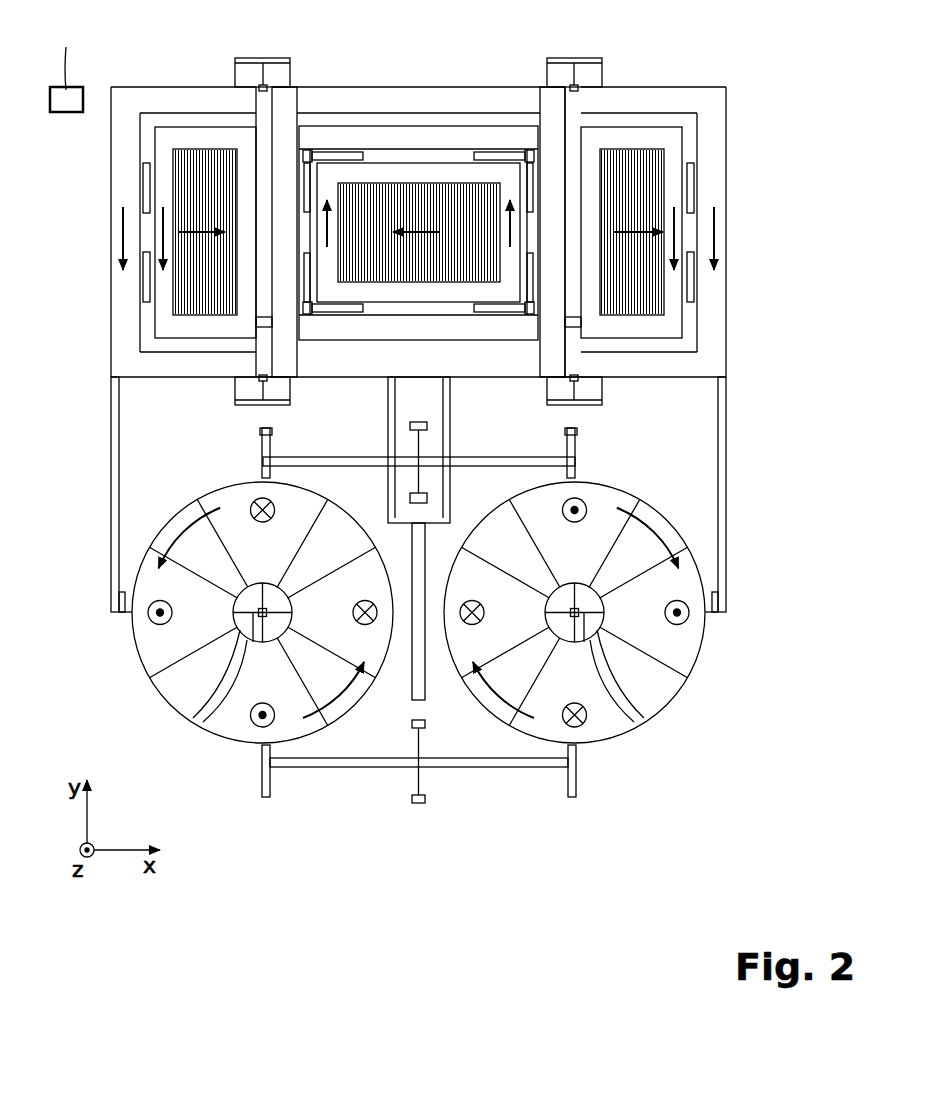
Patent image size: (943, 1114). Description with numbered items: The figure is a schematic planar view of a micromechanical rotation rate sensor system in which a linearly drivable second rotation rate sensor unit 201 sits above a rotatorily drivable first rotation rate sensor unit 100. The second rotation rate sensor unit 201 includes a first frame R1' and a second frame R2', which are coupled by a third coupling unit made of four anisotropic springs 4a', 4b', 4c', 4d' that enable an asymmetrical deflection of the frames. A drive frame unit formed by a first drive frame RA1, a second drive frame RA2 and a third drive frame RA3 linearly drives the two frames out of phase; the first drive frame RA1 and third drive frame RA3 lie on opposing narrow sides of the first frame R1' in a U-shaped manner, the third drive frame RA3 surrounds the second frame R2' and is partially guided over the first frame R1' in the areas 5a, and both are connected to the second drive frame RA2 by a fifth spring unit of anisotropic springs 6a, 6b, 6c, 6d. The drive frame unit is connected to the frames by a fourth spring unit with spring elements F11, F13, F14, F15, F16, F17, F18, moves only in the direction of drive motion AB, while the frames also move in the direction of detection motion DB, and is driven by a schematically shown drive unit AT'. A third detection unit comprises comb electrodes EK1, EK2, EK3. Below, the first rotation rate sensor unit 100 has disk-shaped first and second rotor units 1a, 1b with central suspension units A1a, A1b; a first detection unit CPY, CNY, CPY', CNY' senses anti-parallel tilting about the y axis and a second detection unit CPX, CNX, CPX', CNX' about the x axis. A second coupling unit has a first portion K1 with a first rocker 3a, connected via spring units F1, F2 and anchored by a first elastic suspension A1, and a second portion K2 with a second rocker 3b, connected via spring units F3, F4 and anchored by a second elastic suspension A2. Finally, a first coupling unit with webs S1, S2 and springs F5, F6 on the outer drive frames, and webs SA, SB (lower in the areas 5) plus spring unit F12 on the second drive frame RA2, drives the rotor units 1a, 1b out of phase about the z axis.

The second rotation rate sensor unit 201 is at (433, 404).
The first rotation rate sensor unit 100 is at (446, 643).
The first drive frame RA1 is at (717, 190).
The second drive frame RA2 is at (433, 100).
The third drive frame RA3 is at (112, 292).
The areas where third drive frame is guided over first frame 5a is at (265, 135).
The areas of webs extending in a lower plane 5 is at (423, 450).
The first multitude of capacitive comb electrodes EK1 is at (190, 160).
The second multitude of capacitive comb electrodes EK2 is at (630, 160).
The third multitude of capacitive comb electrodes EK3 is at (378, 210).
The spring element F15 is at (225, 190).
The spring element F17 is at (580, 140).
The spring element F11 is at (712, 170).
The spring unit F12 is at (694, 293).
The spring element F13 is at (146, 290).
The spring element F14 is at (150, 185).
The spring element F16 is at (307, 272).
The spring element F18 is at (548, 290).
The anisotropic spring 4a' is at (333, 92).
The anisotropic spring 4b' is at (504, 92).
The anisotropic spring 4c' is at (338, 367).
The anisotropic spring 4d' is at (498, 367).
The anisotropic spring 6a is at (290, 72).
The anisotropic spring 6b is at (602, 72).
The anisotropic spring 6c is at (233, 390).
The anisotropic spring 6d is at (602, 390).
The direction of detection motion DB is at (178, 230).
The direction of drive motion AB is at (121, 237).
The first frame R1' is at (747, 272).
The second frame R2' is at (656, 299).
The drive unit AT' is at (65, 67).
The web SA is at (388, 507).
The web SB is at (450, 507).
The second elastic suspension A2 is at (450, 443).
The first elastic suspension A1 is at (413, 777).
The first rocker 3a is at (447, 767).
The second rocker 3b is at (522, 457).
The spring unit F1 is at (266, 797).
The spring unit F2 is at (572, 797).
The spring unit F3 is at (262, 452).
The spring unit F4 is at (576, 452).
The spring unit F5 is at (118, 613).
The spring unit F6 is at (714, 613).
The web S1 is at (111, 462).
The web S2 is at (727, 467).
The first portion of second coupling unit K1 is at (488, 822).
The second portion of second coupling unit K2 is at (665, 453).
The first rotor unit 1a is at (262, 635).
The second rotor unit 1b is at (574, 635).
The first suspension unit A1a is at (205, 722).
The second suspension unit A1b is at (632, 722).
The first detection unit electrode CNY is at (263, 524).
The second detection unit electrode CPX is at (182, 614).
The second detection unit electrode CNX is at (342, 614).
The first detection unit electrode CPY is at (262, 704).
The first detection unit electrode CPY' is at (574, 524).
The second detection unit electrode CNX' is at (498, 614).
The second detection unit electrode CPX' is at (654, 614).
The first detection unit electrode CNY' is at (576, 704).